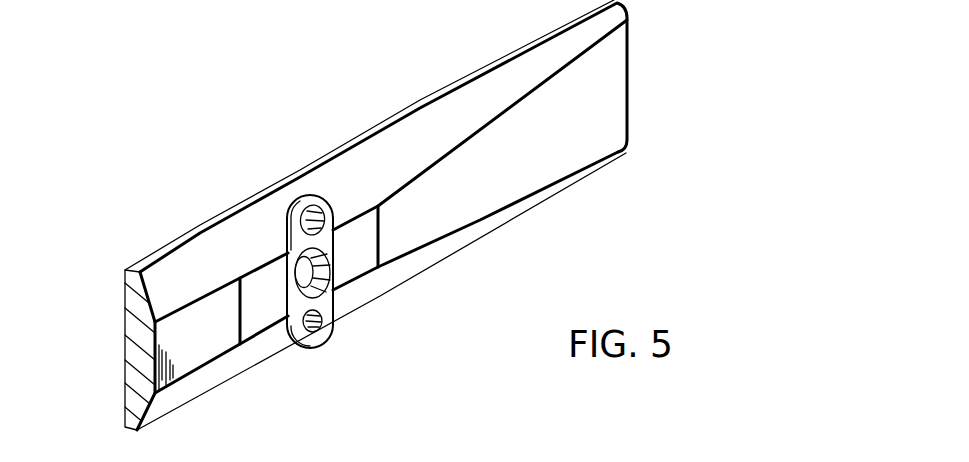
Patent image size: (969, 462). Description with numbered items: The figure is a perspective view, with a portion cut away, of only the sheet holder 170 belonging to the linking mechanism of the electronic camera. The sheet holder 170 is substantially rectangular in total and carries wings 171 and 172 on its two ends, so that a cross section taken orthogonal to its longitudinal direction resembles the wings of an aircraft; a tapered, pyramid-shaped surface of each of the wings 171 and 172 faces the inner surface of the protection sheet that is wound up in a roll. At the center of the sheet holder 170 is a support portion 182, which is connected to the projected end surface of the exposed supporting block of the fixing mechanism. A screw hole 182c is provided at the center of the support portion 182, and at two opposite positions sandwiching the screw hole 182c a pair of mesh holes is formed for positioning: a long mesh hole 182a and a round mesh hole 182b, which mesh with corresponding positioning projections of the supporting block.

The sheet holder 170 is at (417, 97).
The wing 171 is at (200, 360).
The wing 172 is at (520, 185).
The support portion 182 is at (260, 287).
The mesh hole 182a is at (310, 204).
The mesh hole 182b is at (313, 333).
The screw hole 182c is at (330, 280).